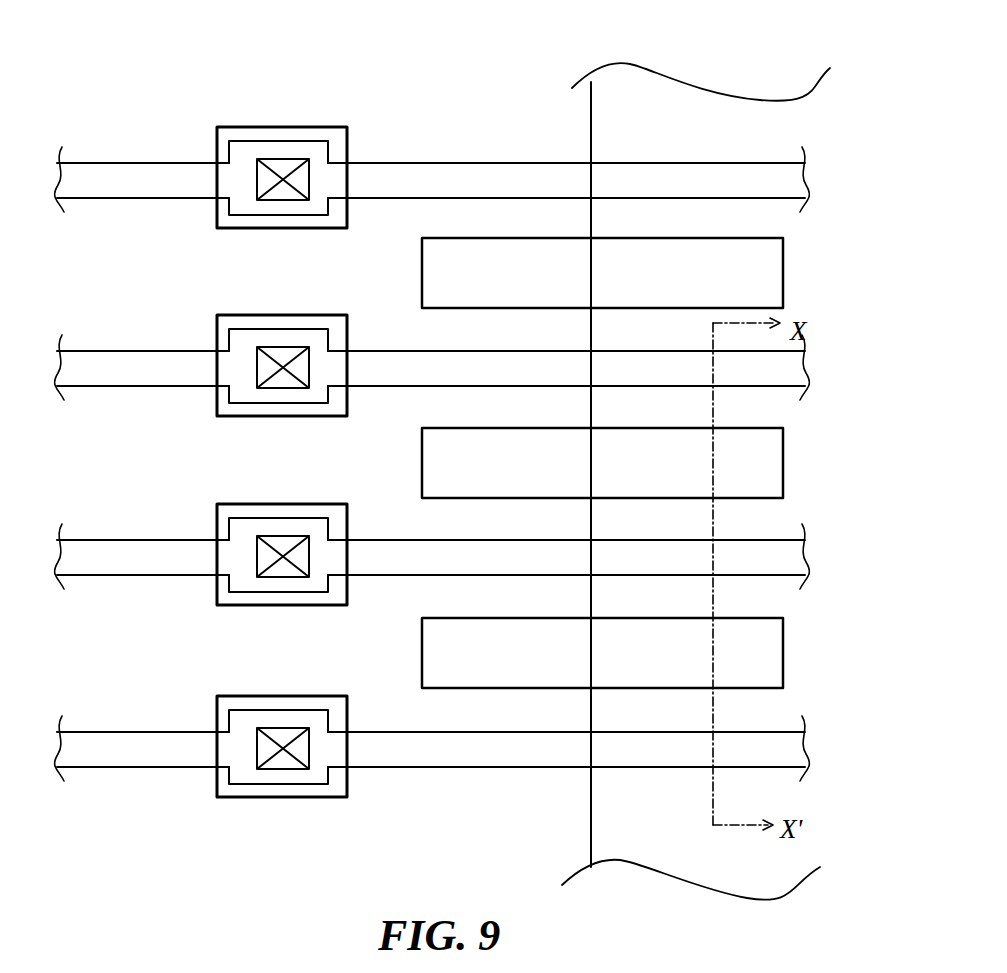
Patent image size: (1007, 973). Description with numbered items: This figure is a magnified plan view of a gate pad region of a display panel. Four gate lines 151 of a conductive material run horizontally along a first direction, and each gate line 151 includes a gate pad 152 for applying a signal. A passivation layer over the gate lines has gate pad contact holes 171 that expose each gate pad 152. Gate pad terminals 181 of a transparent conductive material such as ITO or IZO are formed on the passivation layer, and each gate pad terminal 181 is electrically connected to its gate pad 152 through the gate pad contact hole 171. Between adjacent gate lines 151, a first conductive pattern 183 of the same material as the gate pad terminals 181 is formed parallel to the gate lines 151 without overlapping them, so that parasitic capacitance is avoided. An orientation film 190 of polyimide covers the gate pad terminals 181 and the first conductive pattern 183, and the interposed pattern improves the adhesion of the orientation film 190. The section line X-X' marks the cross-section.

The gate line 151 is at (438, 163).
The gate pad 152 is at (245, 141).
The gate pad contact hole 171 is at (308, 156).
The gate pad terminal 181 is at (278, 127).
The first conductive pattern 183 is at (598, 236).
The orientation film 190 is at (690, 100).